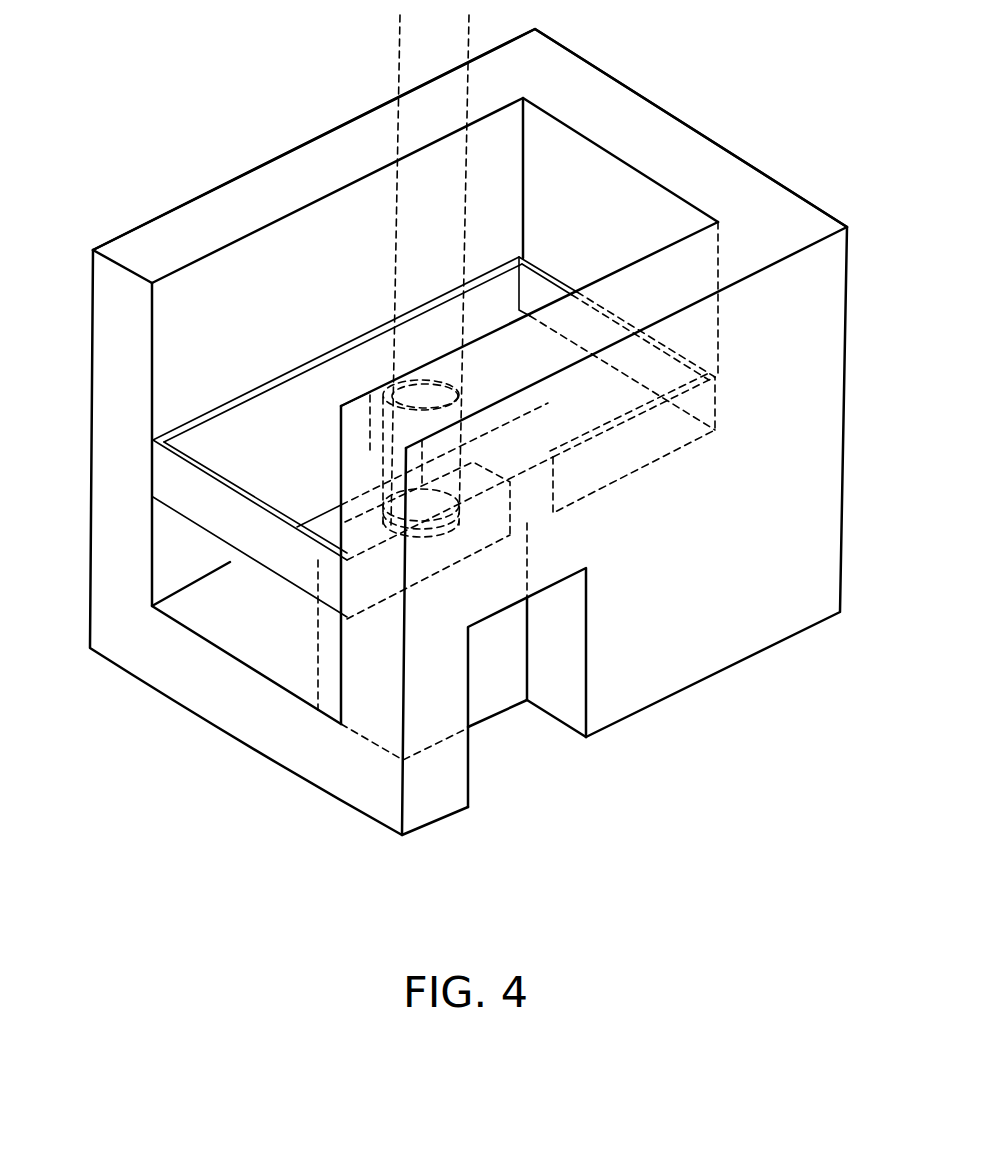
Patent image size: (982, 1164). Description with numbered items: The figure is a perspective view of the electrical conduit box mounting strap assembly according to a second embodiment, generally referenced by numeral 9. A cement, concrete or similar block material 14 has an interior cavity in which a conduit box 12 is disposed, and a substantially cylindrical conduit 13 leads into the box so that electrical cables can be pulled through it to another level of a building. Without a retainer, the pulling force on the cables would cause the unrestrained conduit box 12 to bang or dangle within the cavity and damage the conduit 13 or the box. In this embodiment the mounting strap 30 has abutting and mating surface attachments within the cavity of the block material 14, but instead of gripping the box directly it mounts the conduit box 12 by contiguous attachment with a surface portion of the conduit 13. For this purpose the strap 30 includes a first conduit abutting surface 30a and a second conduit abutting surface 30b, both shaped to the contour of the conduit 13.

The second embodiment of the electrical conduit box mounting strap assembly 9 is at (177, 122).
The conduit box 12 is at (493, 672).
The conduit 13 is at (497, 15).
The block material 14 is at (800, 212).
The mounting strap 30 is at (163, 480).
The first conduit abutting surface 30a is at (373, 424).
The second conduit abutting surface 30b is at (464, 402).